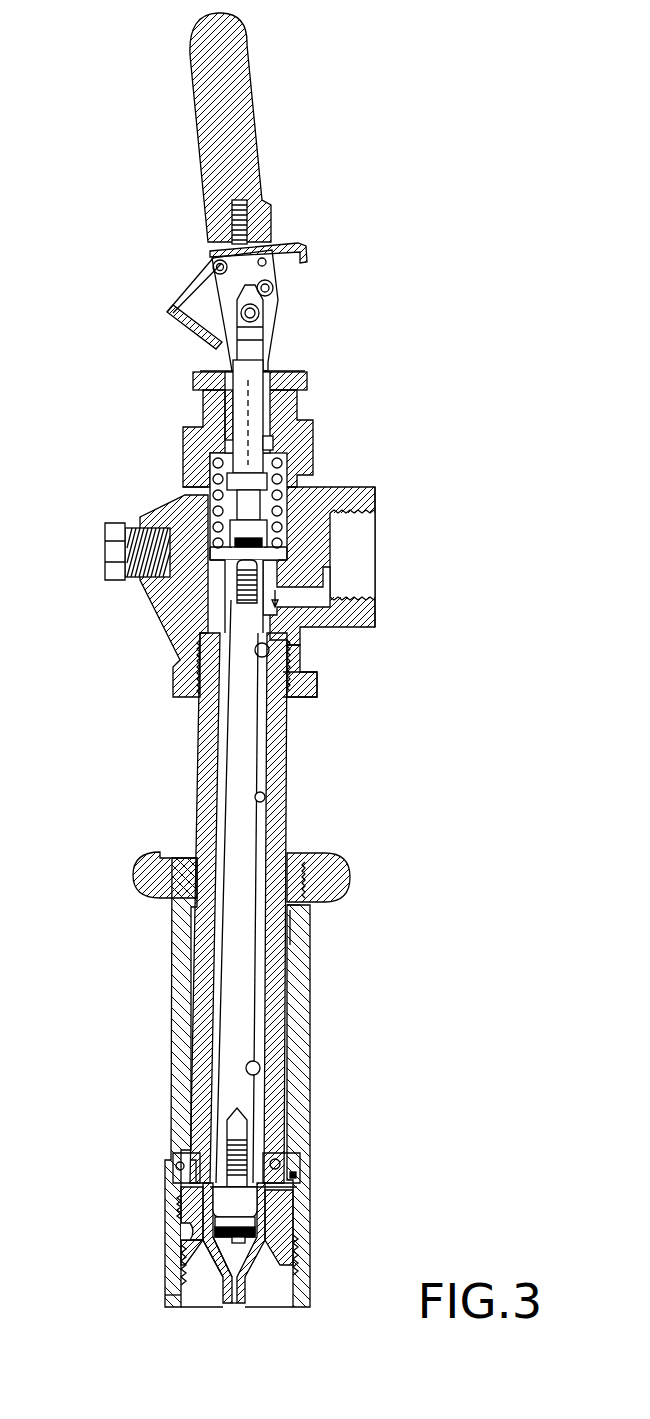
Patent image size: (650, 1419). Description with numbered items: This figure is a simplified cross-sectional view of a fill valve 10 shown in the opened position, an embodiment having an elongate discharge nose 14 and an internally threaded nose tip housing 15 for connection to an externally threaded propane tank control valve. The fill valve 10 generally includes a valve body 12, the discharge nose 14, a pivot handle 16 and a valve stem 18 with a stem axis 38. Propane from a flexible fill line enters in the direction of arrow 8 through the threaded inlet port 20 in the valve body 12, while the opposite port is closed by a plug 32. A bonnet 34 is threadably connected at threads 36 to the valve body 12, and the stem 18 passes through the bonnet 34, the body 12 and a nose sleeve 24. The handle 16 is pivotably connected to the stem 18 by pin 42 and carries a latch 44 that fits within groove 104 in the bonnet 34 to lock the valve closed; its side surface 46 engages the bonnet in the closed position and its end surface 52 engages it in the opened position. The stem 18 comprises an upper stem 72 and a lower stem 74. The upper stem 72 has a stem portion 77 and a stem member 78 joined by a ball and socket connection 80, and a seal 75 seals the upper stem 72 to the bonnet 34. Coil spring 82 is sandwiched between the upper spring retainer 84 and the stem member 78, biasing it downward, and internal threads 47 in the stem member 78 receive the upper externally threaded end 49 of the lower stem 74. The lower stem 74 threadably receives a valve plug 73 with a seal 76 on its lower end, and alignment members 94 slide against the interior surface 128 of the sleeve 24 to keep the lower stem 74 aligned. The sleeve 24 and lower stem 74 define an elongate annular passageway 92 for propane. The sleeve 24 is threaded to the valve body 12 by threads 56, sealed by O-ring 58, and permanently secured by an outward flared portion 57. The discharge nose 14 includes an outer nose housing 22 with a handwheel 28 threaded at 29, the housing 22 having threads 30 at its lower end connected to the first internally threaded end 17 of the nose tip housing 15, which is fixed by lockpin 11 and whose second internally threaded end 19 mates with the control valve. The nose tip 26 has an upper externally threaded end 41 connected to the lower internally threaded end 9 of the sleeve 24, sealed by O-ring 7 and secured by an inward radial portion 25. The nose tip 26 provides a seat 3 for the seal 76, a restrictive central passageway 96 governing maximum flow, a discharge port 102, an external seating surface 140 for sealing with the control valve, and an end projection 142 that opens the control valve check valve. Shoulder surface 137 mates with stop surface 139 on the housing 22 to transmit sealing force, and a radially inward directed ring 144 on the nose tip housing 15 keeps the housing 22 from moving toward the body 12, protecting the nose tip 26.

The seat 3 is at (187, 1255).
The static O-ring 7 is at (285, 1158).
The arrow 8 is at (340, 560).
The lower internally threaded end of sleeve 9 is at (292, 1165).
The fill valve 10 is at (415, 727).
The lockpin 11 is at (300, 1175).
The valve body 12 is at (165, 510).
The elongate discharge nose 14 is at (128, 1003).
The nose tip housing 15 is at (167, 1297).
The pivot handle 16 is at (258, 127).
The first internally threaded end 17 is at (173, 1158).
The valve stem 18 is at (240, 737).
The second internally threaded end 19 is at (180, 1228).
The threaded inlet port 20 is at (377, 533).
The outer nose housing 22 is at (175, 942).
The nose sleeve 24 is at (277, 1000).
The inward radial portion 25 is at (282, 1195).
The nose tip 26 is at (203, 1212).
The handwheel 28 is at (345, 855).
The threads 29 is at (300, 862).
The threads 30 is at (176, 1170).
The plug 32 is at (128, 528).
The bonnet 34 is at (193, 378).
The threads 36 is at (200, 490).
The stem axis 38 is at (250, 422).
The upper externally threaded end 41 is at (190, 1162).
The pin 42 is at (241, 313).
The latch 44 is at (307, 253).
The side surface 46 is at (275, 285).
The internal threads 47 is at (252, 603).
The upper externally threaded end 49 is at (237, 593).
The end surface 52 is at (205, 370).
The threads 56 is at (300, 678).
The outward flared portion 57 is at (290, 660).
The static O-ring 58 is at (313, 695).
The upper stem 72 is at (258, 472).
The valve plug 73 is at (248, 1207).
The lower stem 74 is at (245, 1108).
The seal 75 is at (312, 443).
The seal 76 is at (258, 1235).
The stem portion 77 is at (245, 400).
The stem member 78 is at (210, 555).
The ball and socket connection 80 is at (267, 548).
The coil spring 82 is at (282, 520).
The upper spring retainer 84 is at (306, 457).
The elongate annular passageway 92 is at (262, 752).
The alignment members 94 is at (203, 1185).
The central passageway 96 is at (236, 1282).
The discharge port 102 is at (235, 1290).
The groove 104 is at (297, 402).
The interior surface 128 is at (265, 797).
The shoulder surface 137 is at (300, 903).
The stop surface 139 is at (290, 945).
The external seating surface 140 is at (187, 1268).
The end projection 142 is at (220, 1293).
The radially inward directed ring 144 is at (175, 1198).